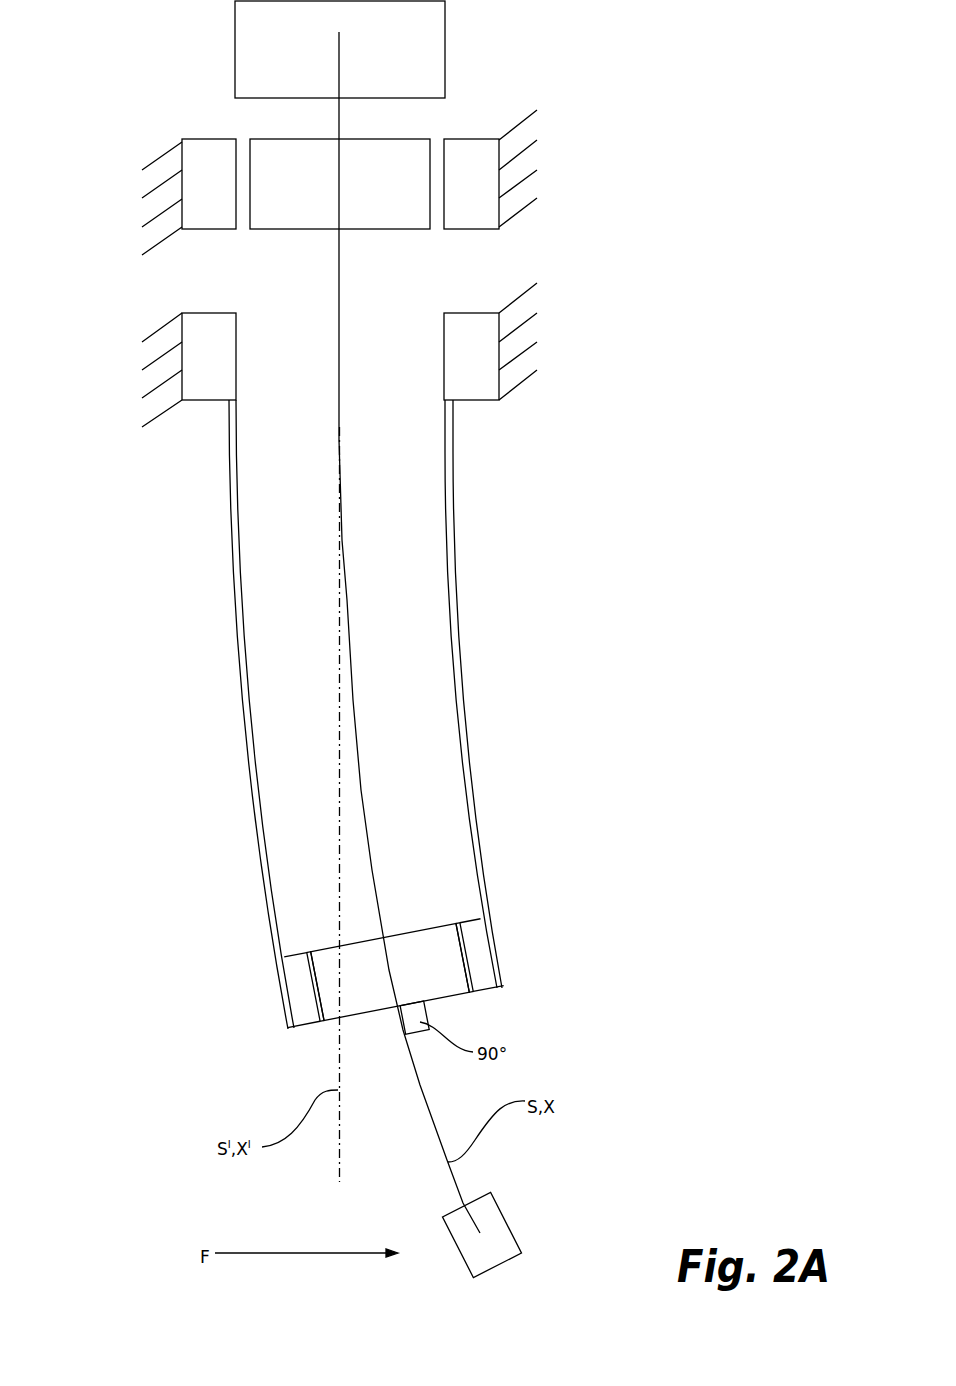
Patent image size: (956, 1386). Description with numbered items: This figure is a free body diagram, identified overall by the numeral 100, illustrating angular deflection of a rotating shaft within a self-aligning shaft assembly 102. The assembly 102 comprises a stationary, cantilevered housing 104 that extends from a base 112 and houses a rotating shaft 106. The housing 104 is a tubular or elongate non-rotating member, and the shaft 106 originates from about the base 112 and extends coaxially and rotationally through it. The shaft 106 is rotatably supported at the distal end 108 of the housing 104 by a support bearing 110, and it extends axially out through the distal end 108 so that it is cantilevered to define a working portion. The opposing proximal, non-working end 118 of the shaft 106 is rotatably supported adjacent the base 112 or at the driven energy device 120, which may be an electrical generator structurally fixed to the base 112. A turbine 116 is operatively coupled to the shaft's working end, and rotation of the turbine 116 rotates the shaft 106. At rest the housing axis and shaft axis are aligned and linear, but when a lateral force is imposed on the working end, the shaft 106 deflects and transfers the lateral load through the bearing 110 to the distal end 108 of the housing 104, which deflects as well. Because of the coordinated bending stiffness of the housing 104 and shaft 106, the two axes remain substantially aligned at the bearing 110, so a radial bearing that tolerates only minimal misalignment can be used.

The medical device assembly 100 is at (620, 760).
The self-aligning shaft assembly 102 is at (362, 797).
The housing 104 is at (253, 823).
The rotating shaft 106 is at (348, 613).
The distal end of the housing 108 is at (438, 952).
The support bearing 110 is at (423, 942).
The base 112 is at (470, 390).
The turbine 116 is at (493, 1228).
The non-working end of the shaft 118 is at (383, 207).
The energy device 120 is at (445, 40).